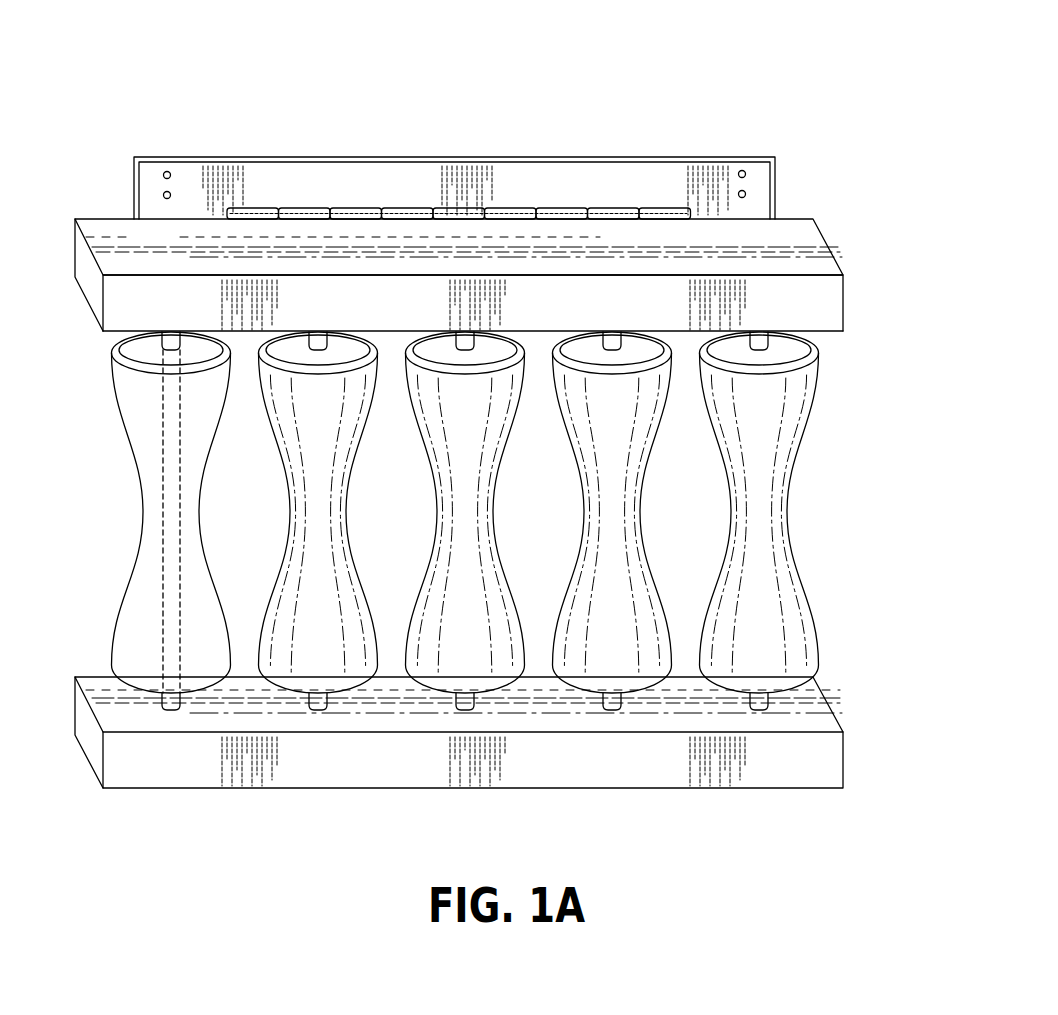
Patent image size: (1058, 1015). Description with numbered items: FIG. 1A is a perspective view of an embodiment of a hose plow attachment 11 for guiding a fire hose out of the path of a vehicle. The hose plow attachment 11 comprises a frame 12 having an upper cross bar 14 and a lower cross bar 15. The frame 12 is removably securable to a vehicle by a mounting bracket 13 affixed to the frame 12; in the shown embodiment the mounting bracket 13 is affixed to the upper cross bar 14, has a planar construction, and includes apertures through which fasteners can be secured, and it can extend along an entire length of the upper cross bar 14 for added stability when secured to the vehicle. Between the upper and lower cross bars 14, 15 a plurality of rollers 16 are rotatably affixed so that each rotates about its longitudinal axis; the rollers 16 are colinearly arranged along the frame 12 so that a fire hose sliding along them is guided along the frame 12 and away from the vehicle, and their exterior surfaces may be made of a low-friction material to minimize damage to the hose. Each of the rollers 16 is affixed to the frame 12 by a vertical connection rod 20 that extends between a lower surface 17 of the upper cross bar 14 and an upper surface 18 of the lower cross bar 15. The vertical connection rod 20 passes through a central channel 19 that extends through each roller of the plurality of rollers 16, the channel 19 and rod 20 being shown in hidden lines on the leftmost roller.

The hose plow attachment 11 is at (655, 112).
The frame 12 is at (116, 214).
The mounting bracket 13 is at (557, 178).
The upper cross bar 14 is at (844, 294).
The lower cross bar 15 is at (843, 757).
The plurality of rollers 16 is at (147, 513).
The lower surface of the upper cross bar 17 is at (830, 333).
The upper surface of the lower cross bar 18 is at (835, 721).
The central channel 19 is at (161, 664).
The vertical connection rod 20 is at (165, 340).